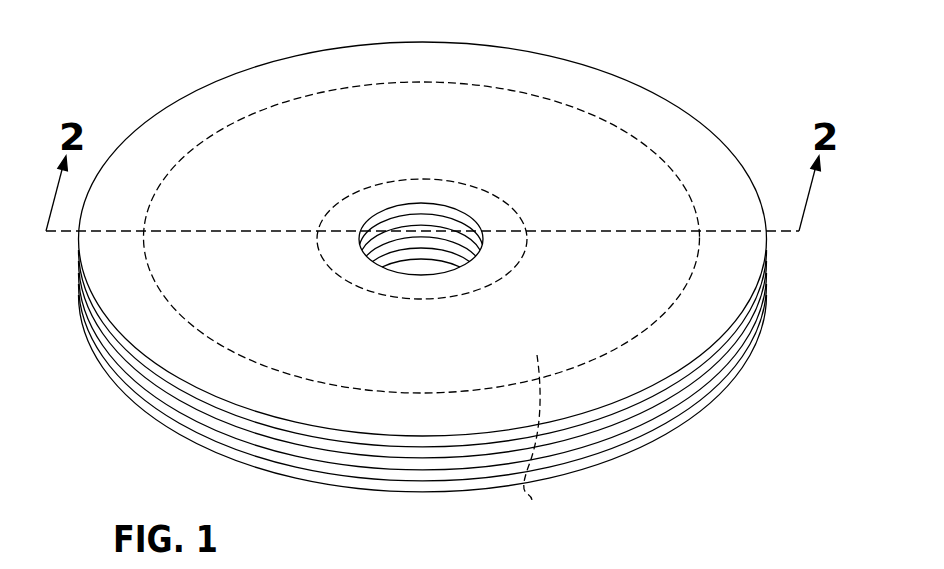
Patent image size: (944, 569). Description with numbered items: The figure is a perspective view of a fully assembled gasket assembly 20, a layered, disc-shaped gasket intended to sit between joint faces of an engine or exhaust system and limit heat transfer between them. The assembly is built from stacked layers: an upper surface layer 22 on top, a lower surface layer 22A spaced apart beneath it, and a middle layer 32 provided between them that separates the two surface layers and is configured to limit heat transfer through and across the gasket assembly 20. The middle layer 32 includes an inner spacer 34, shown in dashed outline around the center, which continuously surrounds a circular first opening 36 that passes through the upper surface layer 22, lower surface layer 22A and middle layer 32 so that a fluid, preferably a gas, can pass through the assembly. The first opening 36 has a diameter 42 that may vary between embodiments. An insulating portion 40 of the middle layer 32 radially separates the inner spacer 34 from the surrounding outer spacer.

The gasket assembly 20 is at (133, 72).
The upper surface layer 22 is at (667, 383).
The lower surface layer 22A is at (648, 443).
The middle layer 32 is at (463, 394).
The inner spacer 34 is at (500, 281).
The first opening 36 is at (404, 222).
The insulating portion 40 is at (534, 441).
The diameter 42 is at (443, 222).